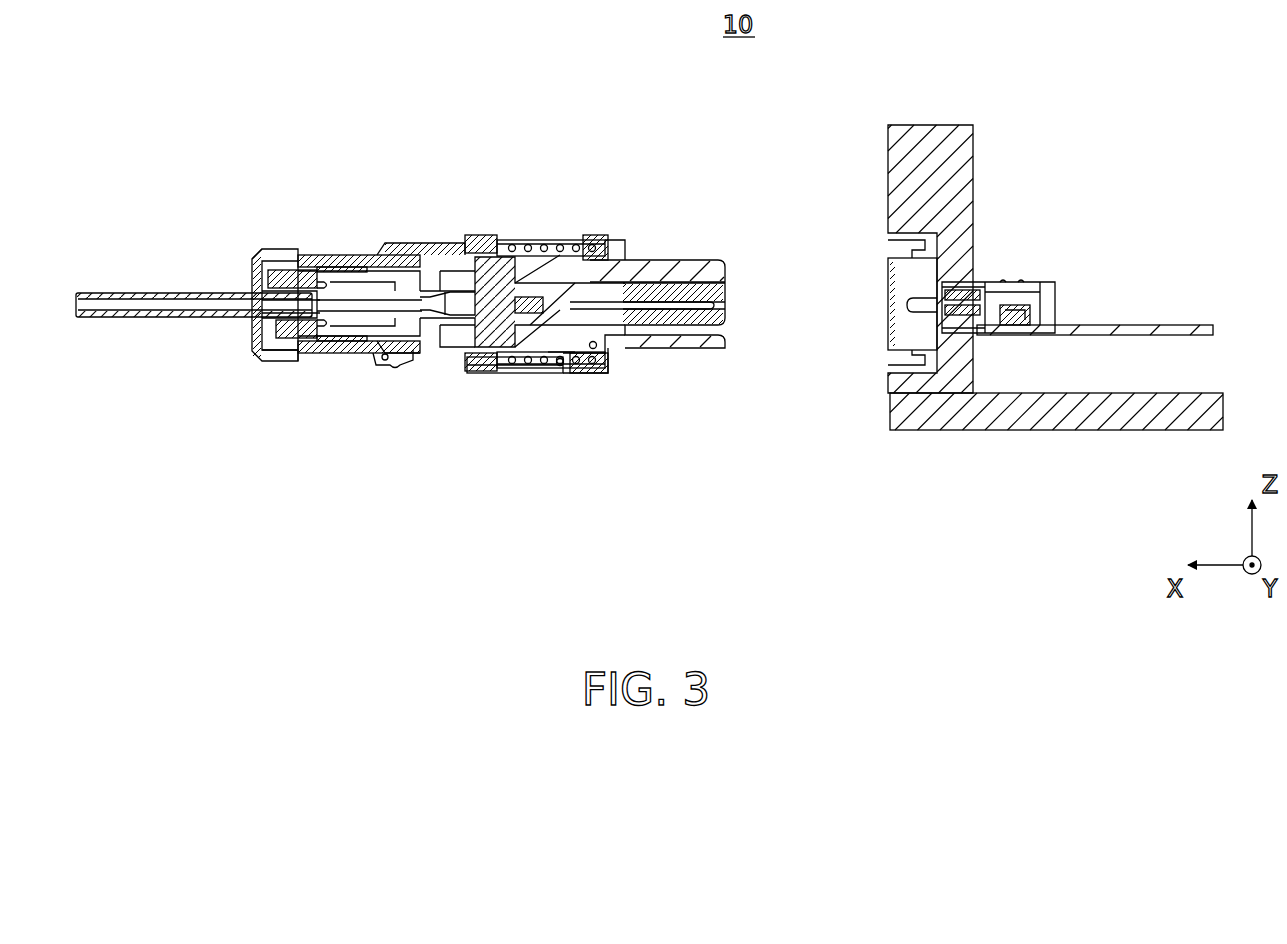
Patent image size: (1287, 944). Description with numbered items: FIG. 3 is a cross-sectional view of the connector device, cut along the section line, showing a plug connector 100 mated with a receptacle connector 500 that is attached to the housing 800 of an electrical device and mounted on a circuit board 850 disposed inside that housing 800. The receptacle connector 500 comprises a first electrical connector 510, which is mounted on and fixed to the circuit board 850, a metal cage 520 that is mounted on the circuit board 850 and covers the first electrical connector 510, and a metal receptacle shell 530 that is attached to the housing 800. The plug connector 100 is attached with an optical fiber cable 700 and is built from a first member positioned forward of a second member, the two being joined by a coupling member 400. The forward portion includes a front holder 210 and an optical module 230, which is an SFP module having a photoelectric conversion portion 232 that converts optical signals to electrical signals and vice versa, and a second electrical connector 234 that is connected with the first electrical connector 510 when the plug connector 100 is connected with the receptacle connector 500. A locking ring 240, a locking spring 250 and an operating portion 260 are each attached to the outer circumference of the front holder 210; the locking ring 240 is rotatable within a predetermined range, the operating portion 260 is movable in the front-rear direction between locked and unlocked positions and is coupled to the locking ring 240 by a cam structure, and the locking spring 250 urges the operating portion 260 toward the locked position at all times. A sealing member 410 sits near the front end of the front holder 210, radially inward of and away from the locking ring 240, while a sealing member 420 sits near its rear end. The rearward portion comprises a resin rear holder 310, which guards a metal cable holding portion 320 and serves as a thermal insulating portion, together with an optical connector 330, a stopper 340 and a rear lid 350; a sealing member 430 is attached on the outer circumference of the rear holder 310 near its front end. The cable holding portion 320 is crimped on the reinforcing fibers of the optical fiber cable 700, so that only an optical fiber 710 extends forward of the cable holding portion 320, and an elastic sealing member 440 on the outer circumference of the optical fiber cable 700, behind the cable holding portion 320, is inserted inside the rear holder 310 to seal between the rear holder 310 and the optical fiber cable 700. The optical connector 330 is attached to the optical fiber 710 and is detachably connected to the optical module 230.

The plug connector 100 is at (475, 122).
The optical fiber cable 700 is at (143, 292).
The optical fiber 710 is at (350, 297).
The front holder 210 is at (460, 373).
The optical module 230 is at (633, 267).
The photoelectric conversion portion 232 is at (550, 240).
The second electrical connector 234 is at (703, 300).
The locking ring 240 is at (597, 372).
The locking spring 250 is at (533, 373).
The operating portion 260 is at (558, 373).
The rear holder 310 is at (337, 353).
The cable holding portion 320 is at (293, 268).
The optical connector 330 is at (478, 290).
The stopper 340 is at (310, 355).
The rear lid 350 is at (257, 360).
The coupling member 400 is at (400, 365).
The sealing member 410 is at (583, 247).
The sealing member 420 is at (490, 247).
The sealing member 430 is at (400, 253).
The sealing member 440 is at (254, 250).
The receptacle connector 500 is at (1065, 274).
The first electrical connector 510 is at (1020, 318).
The cage 520 is at (1017, 283).
The receptacle shell 530 is at (893, 353).
The housing 800 is at (963, 140).
The circuit board 850 is at (1153, 327).